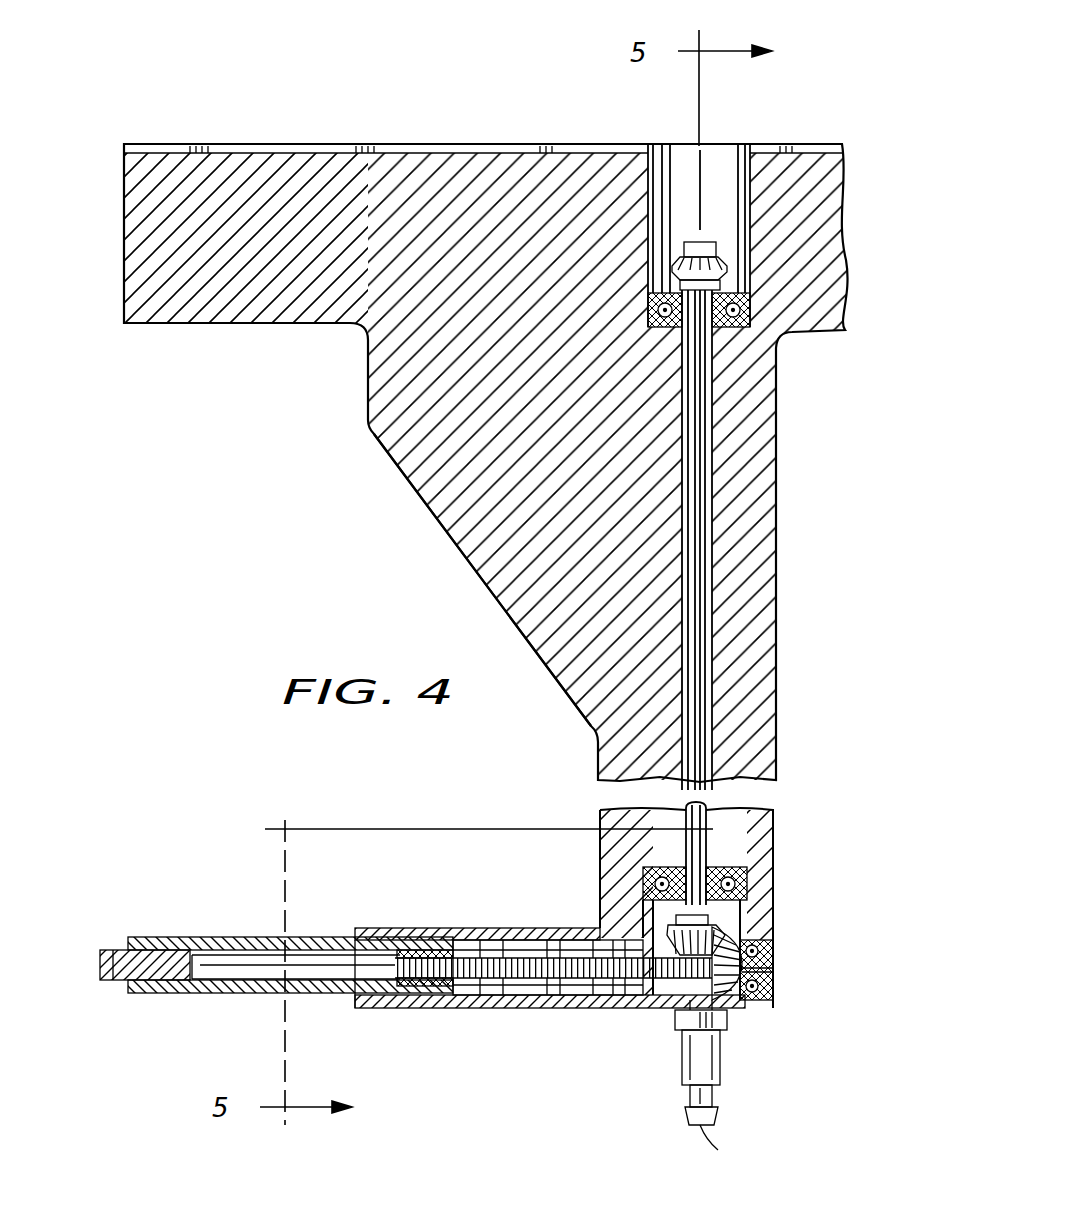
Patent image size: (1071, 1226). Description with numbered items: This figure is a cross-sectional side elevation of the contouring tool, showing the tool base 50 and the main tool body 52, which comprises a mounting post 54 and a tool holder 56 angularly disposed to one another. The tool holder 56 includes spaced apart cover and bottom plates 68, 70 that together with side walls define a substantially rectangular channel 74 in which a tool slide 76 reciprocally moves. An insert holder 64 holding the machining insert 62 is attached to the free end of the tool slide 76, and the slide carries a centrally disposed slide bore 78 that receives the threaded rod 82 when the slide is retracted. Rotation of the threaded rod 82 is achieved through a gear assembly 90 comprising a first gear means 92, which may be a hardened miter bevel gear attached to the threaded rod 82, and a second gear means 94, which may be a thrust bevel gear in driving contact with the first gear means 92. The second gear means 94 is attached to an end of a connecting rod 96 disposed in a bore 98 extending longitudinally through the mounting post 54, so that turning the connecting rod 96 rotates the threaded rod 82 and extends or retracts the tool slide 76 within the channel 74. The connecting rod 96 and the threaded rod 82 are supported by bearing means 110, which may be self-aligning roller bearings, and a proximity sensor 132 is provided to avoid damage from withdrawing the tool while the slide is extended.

The tool base 50 is at (122, 240).
The main tool body 52 is at (452, 544).
The mounting post 54 is at (600, 808).
The tool holder 56 is at (518, 1014).
The machining insert 62 is at (102, 955).
The insert holder 64 is at (115, 982).
The cover plate 68 is at (653, 1010).
The bottom plate 70 is at (420, 928).
The channel 74 is at (510, 945).
The tool slide 76 is at (215, 993).
The slide bore 78 is at (243, 955).
The threaded rod 82 is at (575, 980).
The gear assembly 90 is at (742, 940).
The first gear means 92 is at (725, 1010).
The second gear means 94 is at (712, 932).
The connecting rod 96 is at (700, 507).
The bore 98 is at (705, 658).
The bearing means 110 is at (748, 866).
The proximity sensor 132 is at (720, 1060).